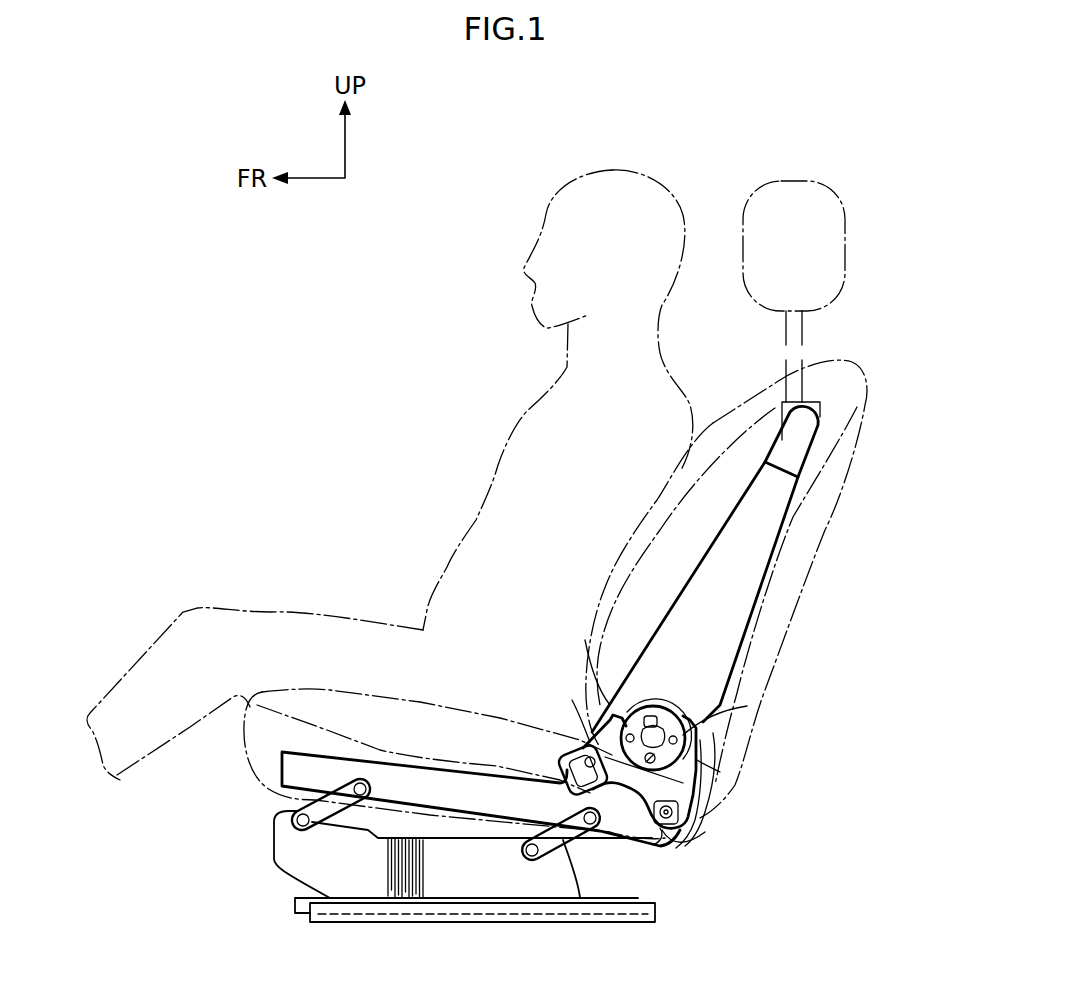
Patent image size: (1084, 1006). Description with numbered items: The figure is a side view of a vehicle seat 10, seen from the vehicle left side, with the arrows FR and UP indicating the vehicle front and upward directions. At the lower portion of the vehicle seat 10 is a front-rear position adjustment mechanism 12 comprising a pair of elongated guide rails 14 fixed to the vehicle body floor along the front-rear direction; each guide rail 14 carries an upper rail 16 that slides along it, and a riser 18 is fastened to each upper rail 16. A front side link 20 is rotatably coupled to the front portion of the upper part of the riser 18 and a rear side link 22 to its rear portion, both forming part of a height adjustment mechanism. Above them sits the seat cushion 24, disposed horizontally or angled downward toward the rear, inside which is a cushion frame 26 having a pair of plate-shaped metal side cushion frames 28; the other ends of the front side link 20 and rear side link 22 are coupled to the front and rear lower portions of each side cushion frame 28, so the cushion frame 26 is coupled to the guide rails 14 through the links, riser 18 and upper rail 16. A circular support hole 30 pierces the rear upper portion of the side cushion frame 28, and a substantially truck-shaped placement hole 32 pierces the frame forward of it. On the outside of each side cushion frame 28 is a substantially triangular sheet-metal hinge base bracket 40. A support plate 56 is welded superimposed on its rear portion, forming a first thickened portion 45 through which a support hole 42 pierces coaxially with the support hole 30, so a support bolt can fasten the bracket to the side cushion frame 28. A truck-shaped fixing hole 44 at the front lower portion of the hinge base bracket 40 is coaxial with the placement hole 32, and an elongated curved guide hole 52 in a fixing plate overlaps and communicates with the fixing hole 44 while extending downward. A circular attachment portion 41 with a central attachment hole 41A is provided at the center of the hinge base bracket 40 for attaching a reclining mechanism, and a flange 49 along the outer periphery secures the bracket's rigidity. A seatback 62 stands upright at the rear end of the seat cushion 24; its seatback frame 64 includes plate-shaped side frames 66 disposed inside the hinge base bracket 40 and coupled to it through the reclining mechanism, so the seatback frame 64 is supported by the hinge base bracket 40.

The vehicle seat 10 is at (766, 135).
The front-rear position adjustment mechanism 12 is at (435, 932).
The guide rail 14 is at (508, 924).
The upper rail 16 is at (295, 908).
The riser 18 is at (271, 851).
The front side link 20 is at (292, 814).
The rear side link 22 is at (567, 845).
The seat cushion 24 is at (240, 775).
The cushion frame 26 is at (688, 843).
The side cushion frame 28 is at (653, 845).
The support hole 30 is at (697, 797).
The placement hole 32 is at (572, 700).
The hinge base bracket 40 is at (693, 718).
The attachment portion 41 is at (698, 752).
The attachment hole 41A is at (656, 722).
The support hole 42 is at (678, 814).
The fixing hole 44 is at (565, 757).
The first thickened portion 45 is at (688, 843).
The flange 49 is at (585, 660).
The guide hole 52 is at (577, 747).
The support plate 56 is at (698, 770).
The seatback 62 is at (853, 433).
The seatback frame 64 is at (797, 505).
The side frame 66 is at (735, 648).